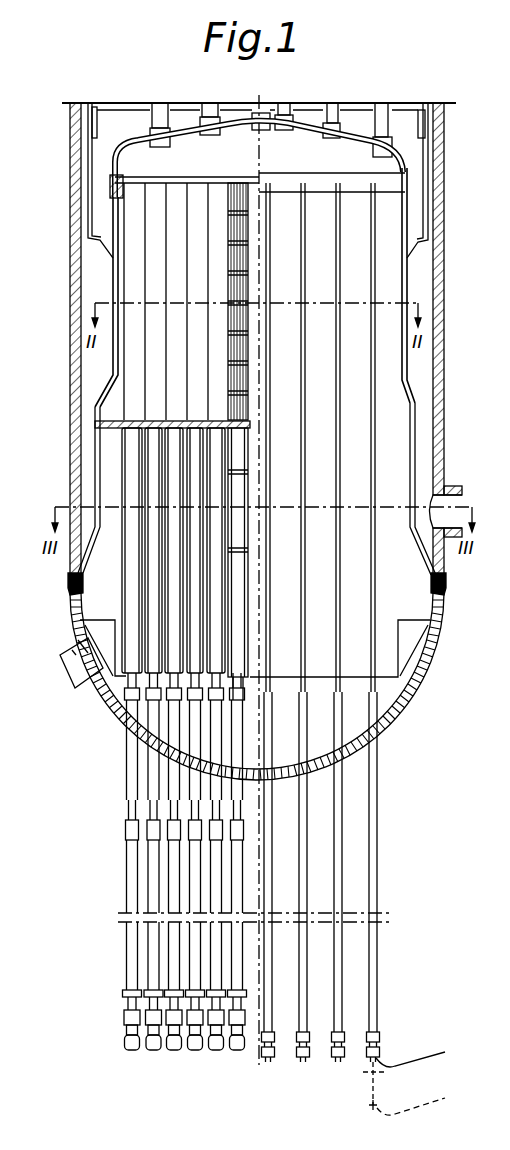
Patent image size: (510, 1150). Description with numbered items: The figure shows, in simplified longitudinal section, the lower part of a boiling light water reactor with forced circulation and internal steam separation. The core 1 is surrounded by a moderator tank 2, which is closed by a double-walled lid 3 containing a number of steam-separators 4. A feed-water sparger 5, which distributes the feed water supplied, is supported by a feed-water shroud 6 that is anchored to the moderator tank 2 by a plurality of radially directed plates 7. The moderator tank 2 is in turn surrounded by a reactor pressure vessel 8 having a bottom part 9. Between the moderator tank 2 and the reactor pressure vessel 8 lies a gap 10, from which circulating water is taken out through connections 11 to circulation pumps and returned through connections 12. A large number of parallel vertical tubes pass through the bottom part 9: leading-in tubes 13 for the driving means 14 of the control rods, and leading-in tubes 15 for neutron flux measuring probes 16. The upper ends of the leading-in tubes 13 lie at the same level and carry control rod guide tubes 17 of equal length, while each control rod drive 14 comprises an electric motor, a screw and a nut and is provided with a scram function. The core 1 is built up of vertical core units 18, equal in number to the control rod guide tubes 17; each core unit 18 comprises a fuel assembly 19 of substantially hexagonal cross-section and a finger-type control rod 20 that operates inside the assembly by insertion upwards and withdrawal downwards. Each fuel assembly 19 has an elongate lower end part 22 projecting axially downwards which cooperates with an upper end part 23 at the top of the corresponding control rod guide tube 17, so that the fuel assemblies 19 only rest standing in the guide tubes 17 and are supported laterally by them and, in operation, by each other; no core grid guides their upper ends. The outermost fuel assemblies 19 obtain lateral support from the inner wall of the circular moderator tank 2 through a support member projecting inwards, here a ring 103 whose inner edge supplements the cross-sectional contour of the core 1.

The core 1 is at (145, 262).
The moderator tank 2 is at (402, 357).
The double-walled lid 3 is at (305, 125).
The steam-separators 4 is at (383, 112).
The feed-water sparger 5 is at (422, 124).
The feed-water shroud 6 is at (428, 178).
The radially directed plates 7 is at (413, 221).
The reactor pressure vessel 8 is at (440, 262).
The bottom part 9 is at (408, 693).
The gap 10 is at (418, 380).
The connections 11 is at (450, 500).
The connections 12 is at (78, 682).
The leading-in tubes 13 is at (155, 768).
The driving means for control rods 14 is at (152, 945).
The leading-in tubes 15 is at (340, 805).
The neutron flux measuring probes 16 is at (373, 367).
The control rod guide tubes 17 is at (130, 455).
The core units 18 is at (132, 358).
The fuel assembly 19 is at (252, 368).
The finger-type control rod 20 is at (240, 610).
The lower end part 22 is at (243, 440).
The upper end part 23 is at (246, 462).
The ring 103 is at (110, 186).